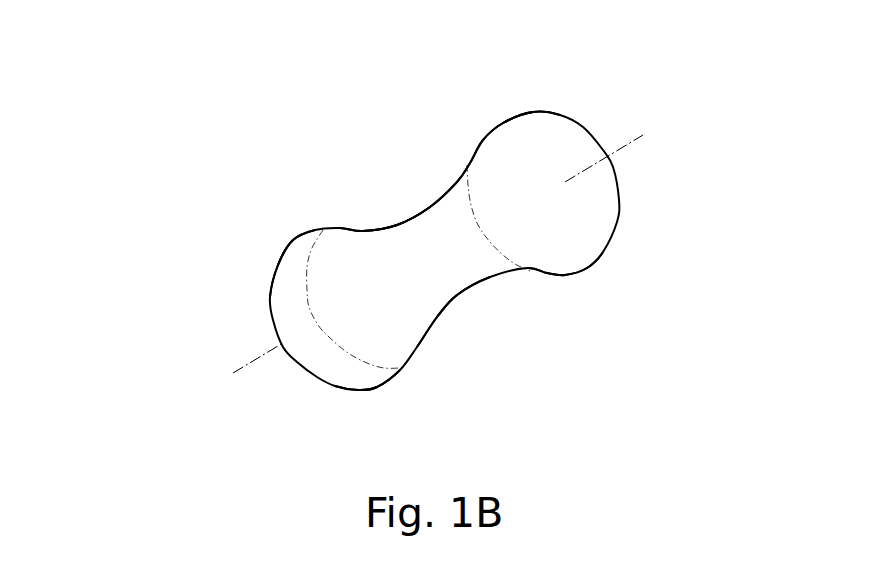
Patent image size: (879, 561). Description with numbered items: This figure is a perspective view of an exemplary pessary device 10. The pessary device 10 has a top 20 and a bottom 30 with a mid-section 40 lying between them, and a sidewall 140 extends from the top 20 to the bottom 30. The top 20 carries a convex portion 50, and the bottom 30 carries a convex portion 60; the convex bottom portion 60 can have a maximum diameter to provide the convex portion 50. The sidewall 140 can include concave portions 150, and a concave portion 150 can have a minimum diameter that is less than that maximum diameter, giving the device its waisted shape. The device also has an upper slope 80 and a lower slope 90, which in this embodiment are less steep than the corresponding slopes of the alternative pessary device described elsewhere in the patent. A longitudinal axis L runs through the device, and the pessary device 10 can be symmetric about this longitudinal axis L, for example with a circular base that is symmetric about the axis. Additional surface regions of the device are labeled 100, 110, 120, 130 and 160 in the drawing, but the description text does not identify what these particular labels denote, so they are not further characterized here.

The pessary device 10 is at (667, 75).
The top 20 is at (587, 270).
The bottom 30 is at (374, 390).
The mid-section 40 is at (458, 297).
The convex portion of the top 50 is at (560, 277).
The convex portion of the bottom 60 is at (361, 393).
The upper slope 80 is at (457, 183).
The lower slope 90 is at (360, 227).
The first end top 100 is at (523, 115).
The first end upper shoulder 110 is at (507, 120).
The second end outer surface 120 is at (283, 252).
The second end upper shoulder 130 is at (295, 242).
The sidewall 140 is at (398, 222).
The concave portion 150 is at (432, 206).
The lower waist surface 160 is at (445, 308).
The longitudinal axis L is at (447, 240).